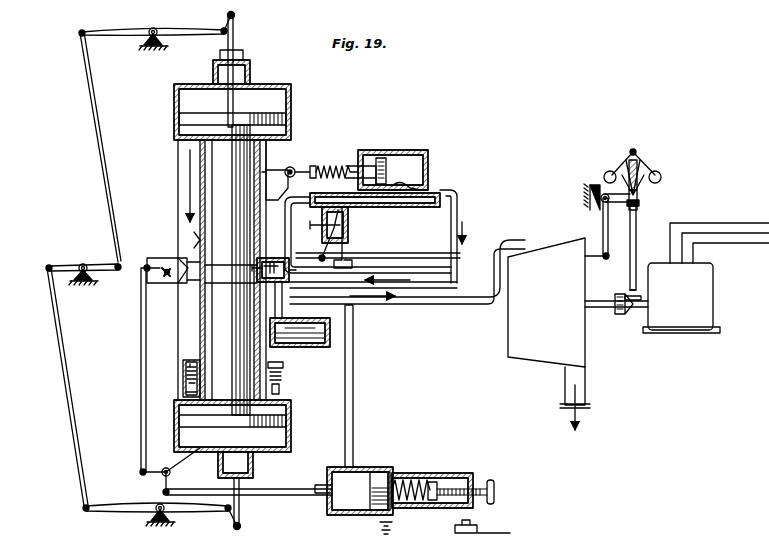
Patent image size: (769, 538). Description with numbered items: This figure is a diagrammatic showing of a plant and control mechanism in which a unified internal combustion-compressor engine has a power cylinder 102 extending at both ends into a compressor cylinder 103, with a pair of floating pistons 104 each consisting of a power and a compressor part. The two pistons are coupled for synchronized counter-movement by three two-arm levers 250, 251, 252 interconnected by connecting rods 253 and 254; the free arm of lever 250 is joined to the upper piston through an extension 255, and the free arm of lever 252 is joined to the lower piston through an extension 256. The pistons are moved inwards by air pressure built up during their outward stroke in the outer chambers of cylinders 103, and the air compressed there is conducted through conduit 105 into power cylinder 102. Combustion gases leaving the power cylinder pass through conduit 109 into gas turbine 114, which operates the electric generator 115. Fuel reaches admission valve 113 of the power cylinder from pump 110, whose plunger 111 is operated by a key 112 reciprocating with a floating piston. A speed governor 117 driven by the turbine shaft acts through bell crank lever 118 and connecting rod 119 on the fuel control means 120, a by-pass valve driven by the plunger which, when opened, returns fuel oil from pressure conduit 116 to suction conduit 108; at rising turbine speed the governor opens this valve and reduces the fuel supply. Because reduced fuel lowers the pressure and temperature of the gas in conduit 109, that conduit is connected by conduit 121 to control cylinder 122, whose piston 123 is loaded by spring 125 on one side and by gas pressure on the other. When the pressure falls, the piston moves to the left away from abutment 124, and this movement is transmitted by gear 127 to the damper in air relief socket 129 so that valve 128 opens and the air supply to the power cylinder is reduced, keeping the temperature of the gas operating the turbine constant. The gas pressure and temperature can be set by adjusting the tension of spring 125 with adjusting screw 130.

The power cylinder 102 is at (200, 305).
The compressor cylinder 103 is at (270, 95).
The floating piston 104 is at (215, 160).
The conduit 105 is at (186, 196).
The suction conduit 108 is at (350, 207).
The conduit 109 is at (440, 305).
The pump 110 is at (392, 160).
The plunger 111 is at (323, 168).
The key 112 is at (280, 172).
The admission valve 113 is at (252, 267).
The gas turbine 114 is at (549, 334).
The electric generator 115 is at (700, 322).
The pressure conduit 116 is at (458, 205).
The speed governor 117 is at (630, 152).
The bell crank lever 118 is at (600, 219).
The connecting rod 119 is at (406, 255).
The fuel control means 120 is at (348, 236).
The conduit 121 is at (356, 374).
The control cylinder 122 is at (340, 478).
The piston 123 is at (378, 470).
The abutment 124 is at (398, 472).
The spring 125 is at (412, 470).
The gear 127 is at (140, 334).
The valve 128 is at (163, 262).
The air relief socket 129 is at (152, 284).
The adjusting screw 130 is at (451, 482).
The two-arm lever 250 is at (90, 27).
The two-arm lever 251 is at (62, 263).
The two-arm lever 252 is at (108, 512).
The connecting rod 253 is at (101, 138).
The connecting rod 254 is at (58, 336).
The extension 255 is at (236, 33).
The extension 256 is at (243, 519).